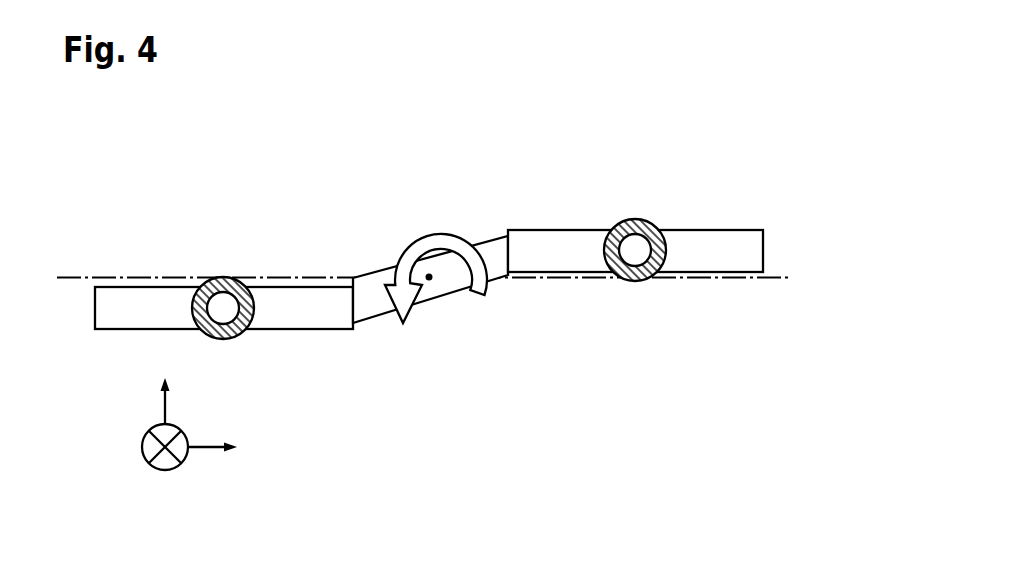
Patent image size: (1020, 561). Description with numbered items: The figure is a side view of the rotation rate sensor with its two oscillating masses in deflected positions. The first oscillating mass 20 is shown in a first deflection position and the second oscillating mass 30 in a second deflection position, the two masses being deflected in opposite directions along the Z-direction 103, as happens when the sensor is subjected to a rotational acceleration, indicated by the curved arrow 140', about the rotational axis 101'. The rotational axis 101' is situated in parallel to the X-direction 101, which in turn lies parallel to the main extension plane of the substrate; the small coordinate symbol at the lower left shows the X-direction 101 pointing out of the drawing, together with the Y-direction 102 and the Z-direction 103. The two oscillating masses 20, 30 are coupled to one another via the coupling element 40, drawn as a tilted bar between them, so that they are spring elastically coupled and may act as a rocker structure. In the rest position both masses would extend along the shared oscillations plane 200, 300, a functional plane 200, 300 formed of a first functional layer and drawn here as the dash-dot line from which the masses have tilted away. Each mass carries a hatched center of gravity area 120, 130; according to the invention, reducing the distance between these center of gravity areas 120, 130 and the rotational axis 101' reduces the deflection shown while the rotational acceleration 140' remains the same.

The first oscillating mass 20 is at (152, 298).
The second oscillating mass 30 is at (738, 242).
The coupling element 40 is at (493, 252).
The center of gravity area 120 is at (217, 282).
The center of gravity area 130 is at (625, 219).
The rotational acceleration 140' is at (436, 234).
The rotational axis 101' is at (431, 322).
The X-direction 101 is at (127, 458).
The Y-direction 102 is at (227, 467).
The Z-direction 103 is at (140, 393).
The oscillations plane 200 is at (439, 325).
The functional plane 300 is at (778, 279).